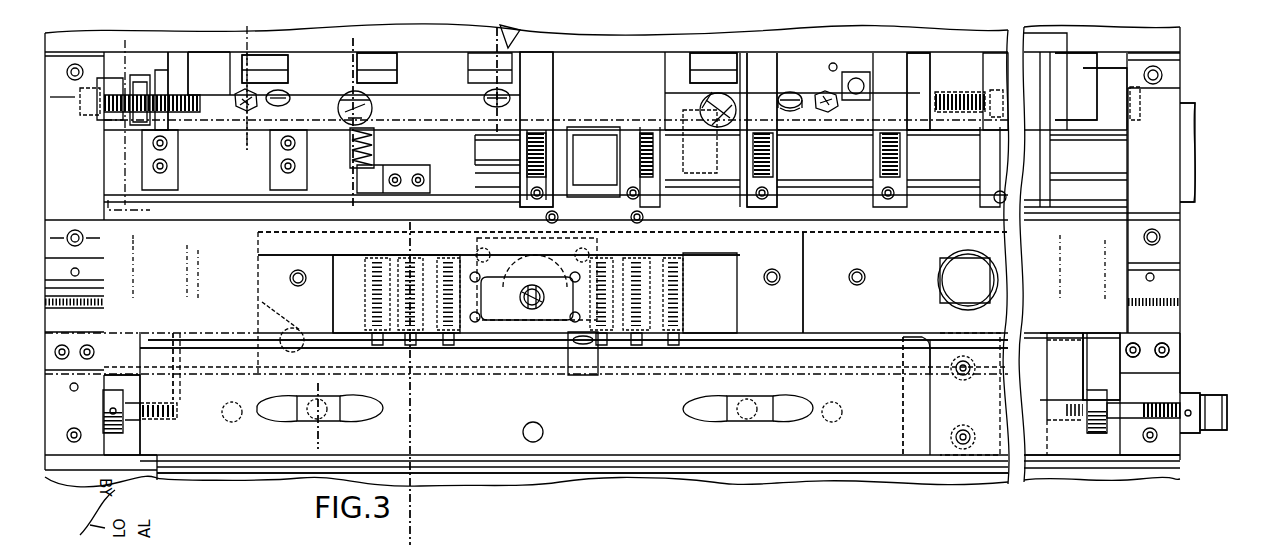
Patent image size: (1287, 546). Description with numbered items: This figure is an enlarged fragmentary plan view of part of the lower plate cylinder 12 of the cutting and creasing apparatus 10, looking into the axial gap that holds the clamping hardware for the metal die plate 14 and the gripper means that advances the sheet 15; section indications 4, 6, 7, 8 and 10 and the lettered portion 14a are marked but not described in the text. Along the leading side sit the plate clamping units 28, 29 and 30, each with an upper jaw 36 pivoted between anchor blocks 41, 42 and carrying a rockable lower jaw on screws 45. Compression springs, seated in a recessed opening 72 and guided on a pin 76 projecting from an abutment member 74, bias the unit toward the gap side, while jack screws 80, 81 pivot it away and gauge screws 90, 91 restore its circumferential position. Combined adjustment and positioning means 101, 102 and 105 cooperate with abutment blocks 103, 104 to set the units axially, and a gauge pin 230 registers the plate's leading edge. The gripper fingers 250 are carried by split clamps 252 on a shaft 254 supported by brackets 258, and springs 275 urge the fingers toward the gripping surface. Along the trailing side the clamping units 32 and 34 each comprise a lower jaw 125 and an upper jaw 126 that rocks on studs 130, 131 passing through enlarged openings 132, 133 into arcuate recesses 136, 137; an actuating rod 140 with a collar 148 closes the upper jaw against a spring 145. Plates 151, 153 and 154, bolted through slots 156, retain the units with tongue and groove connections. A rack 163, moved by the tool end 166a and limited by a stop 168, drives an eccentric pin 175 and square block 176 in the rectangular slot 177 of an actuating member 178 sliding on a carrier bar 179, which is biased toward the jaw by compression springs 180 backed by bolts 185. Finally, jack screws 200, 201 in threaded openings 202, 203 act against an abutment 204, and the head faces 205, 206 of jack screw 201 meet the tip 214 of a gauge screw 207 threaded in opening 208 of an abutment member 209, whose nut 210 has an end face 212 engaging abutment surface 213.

The section line 4- 4 is at (508, 110).
The section line 6- 6 is at (355, 38).
The section line 7- 7 is at (245, 26).
The section line 8- 8 is at (318, 383).
The cutting and creasing apparatus 10 is at (410, 222).
The lower plate cylinder 12 is at (617, 468).
The metal die plate 14 is at (172, 72).
The frame member portion 14a is at (110, 192).
The sheet 15 is at (130, 42).
The plate clamping unit 28 is at (524, 53).
The plate clamping unit 29 is at (1010, 55).
The plate clamping unit 30 is at (1073, 55).
The plate clamping unit 32 is at (458, 432).
The plate clamping unit 34 is at (1042, 446).
The upper jaw 36 is at (443, 52).
The anchor block 41 is at (178, 185).
The anchor block 42 is at (272, 185).
The screw 45 is at (290, 93).
The recessed opening 72 is at (376, 148).
The abutment member 74 is at (358, 182).
The pin 76 is at (352, 152).
The jack screw 80 is at (375, 106).
The jack screw 81 is at (700, 102).
The gauge screw 90 is at (236, 92).
The gauge screw 91 is at (830, 92).
The adjustment and positioning means 101 is at (108, 127).
The adjustment and positioning means 102 is at (1183, 58).
The abutment block 103 is at (62, 172).
The abutment block 104 is at (1165, 174).
The adjustment and positioning means 105 is at (972, 78).
The lower jaw 125 is at (873, 340).
The upper jaw 126 is at (618, 421).
The stud 130 is at (305, 420).
The stud 131 is at (765, 415).
The enlarged opening 132 is at (358, 383).
The enlarged opening 133 is at (765, 393).
The arcuate recess 136 is at (277, 413).
The arcuate recess 137 is at (707, 415).
The actuating rod 140 is at (210, 340).
The spring 145 is at (225, 421).
The collar 148 is at (596, 365).
The plate 151 is at (935, 403).
The plate 153 is at (166, 330).
The plate 154 is at (1060, 335).
The slot 156 is at (970, 394).
The rack 163 is at (840, 325).
The tool engaging outer end portion 166a is at (947, 284).
The stop 168 is at (262, 300).
The eccentric pin 175 is at (527, 325).
The square shaped block 176 is at (548, 318).
The rectangular slot 177 is at (497, 318).
The actuating member 178 is at (258, 255).
The carrier bar 179 is at (258, 233).
The compression spring 180 is at (333, 260).
The bolt 185 is at (410, 258).
The jack screw 200 is at (122, 392).
The jack screw 201 is at (1100, 432).
The threaded opening 202 is at (175, 408).
The threaded opening 203 is at (1067, 425).
The abutment 204 is at (62, 420).
The end face 205 is at (1097, 403).
The end face 206 is at (1108, 430).
The gauge screw 207 is at (1215, 393).
The transverse threaded opening 208 is at (1167, 400).
The abutment member 209 is at (1185, 458).
The nut 210 is at (1186, 380).
The end face 212 is at (1172, 451).
The abutment surface 213 is at (1183, 352).
The tip 214 is at (1120, 375).
The gauge pin 230 is at (234, 62).
The gripper finger 250 is at (545, 70).
The split clamp 252 is at (480, 160).
The shaft 254 is at (497, 155).
The bracket 258 is at (593, 162).
The compression spring 275 is at (540, 132).